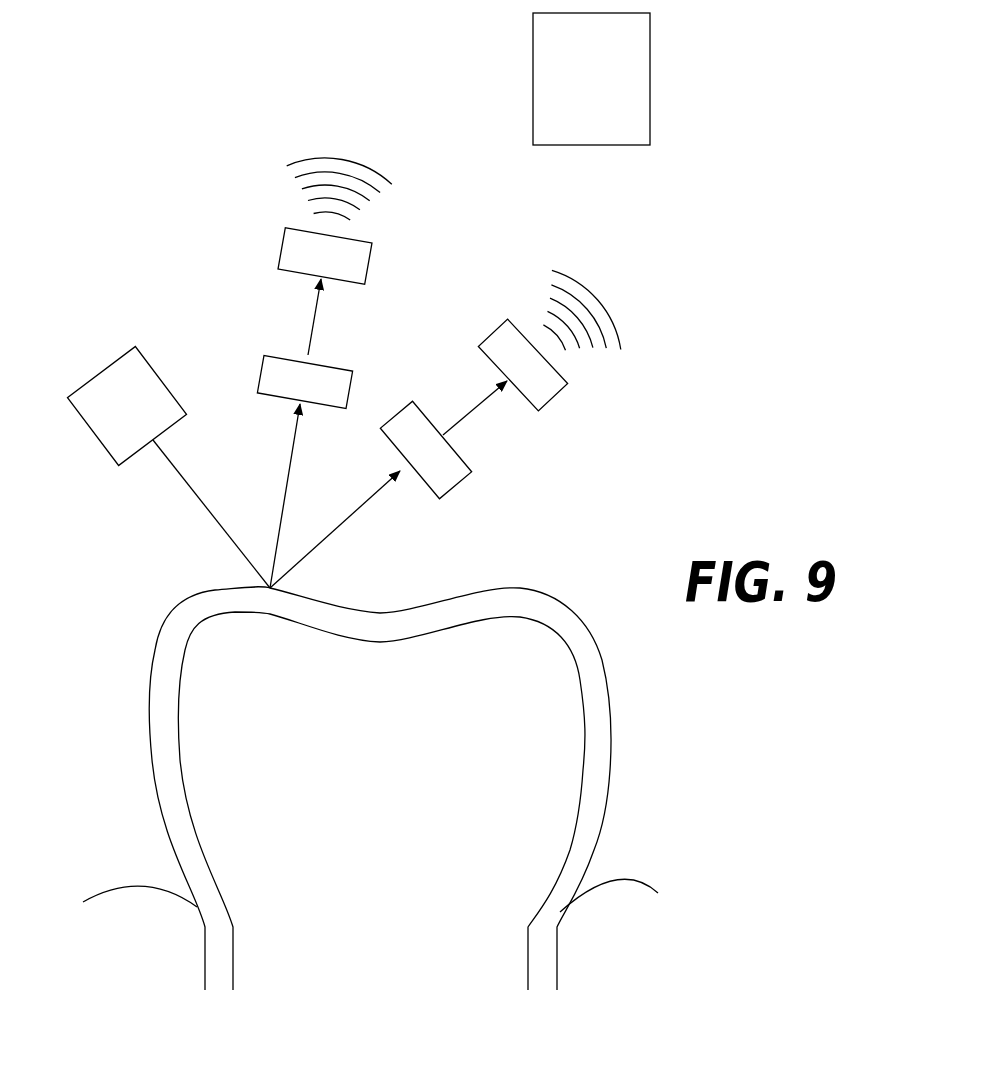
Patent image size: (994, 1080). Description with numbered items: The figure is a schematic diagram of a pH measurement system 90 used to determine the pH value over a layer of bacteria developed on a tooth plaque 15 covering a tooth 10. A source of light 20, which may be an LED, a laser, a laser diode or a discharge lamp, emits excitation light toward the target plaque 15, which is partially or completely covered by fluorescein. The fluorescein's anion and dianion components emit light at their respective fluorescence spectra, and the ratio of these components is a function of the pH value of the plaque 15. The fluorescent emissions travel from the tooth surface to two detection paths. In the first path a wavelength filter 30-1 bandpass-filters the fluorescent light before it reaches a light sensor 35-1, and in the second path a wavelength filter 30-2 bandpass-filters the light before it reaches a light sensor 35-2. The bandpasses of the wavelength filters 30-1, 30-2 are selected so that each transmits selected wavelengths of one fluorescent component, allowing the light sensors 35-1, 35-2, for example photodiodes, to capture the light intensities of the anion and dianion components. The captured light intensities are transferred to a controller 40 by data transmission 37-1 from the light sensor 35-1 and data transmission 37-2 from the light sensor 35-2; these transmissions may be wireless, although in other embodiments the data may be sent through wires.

The pH measurement system 90 is at (133, 187).
The controller 40 is at (650, 80).
The source of light 20 is at (97, 373).
The wavelength filter 30-1 is at (262, 368).
The light sensor 35-1 is at (285, 248).
The data transmission 37-1 is at (380, 157).
The wavelength filter 30-2 is at (455, 487).
The light sensor 35-2 is at (540, 410).
The data transmission 37-2 is at (619, 302).
The tooth 10 is at (395, 823).
The tooth plaque 15 is at (597, 725).